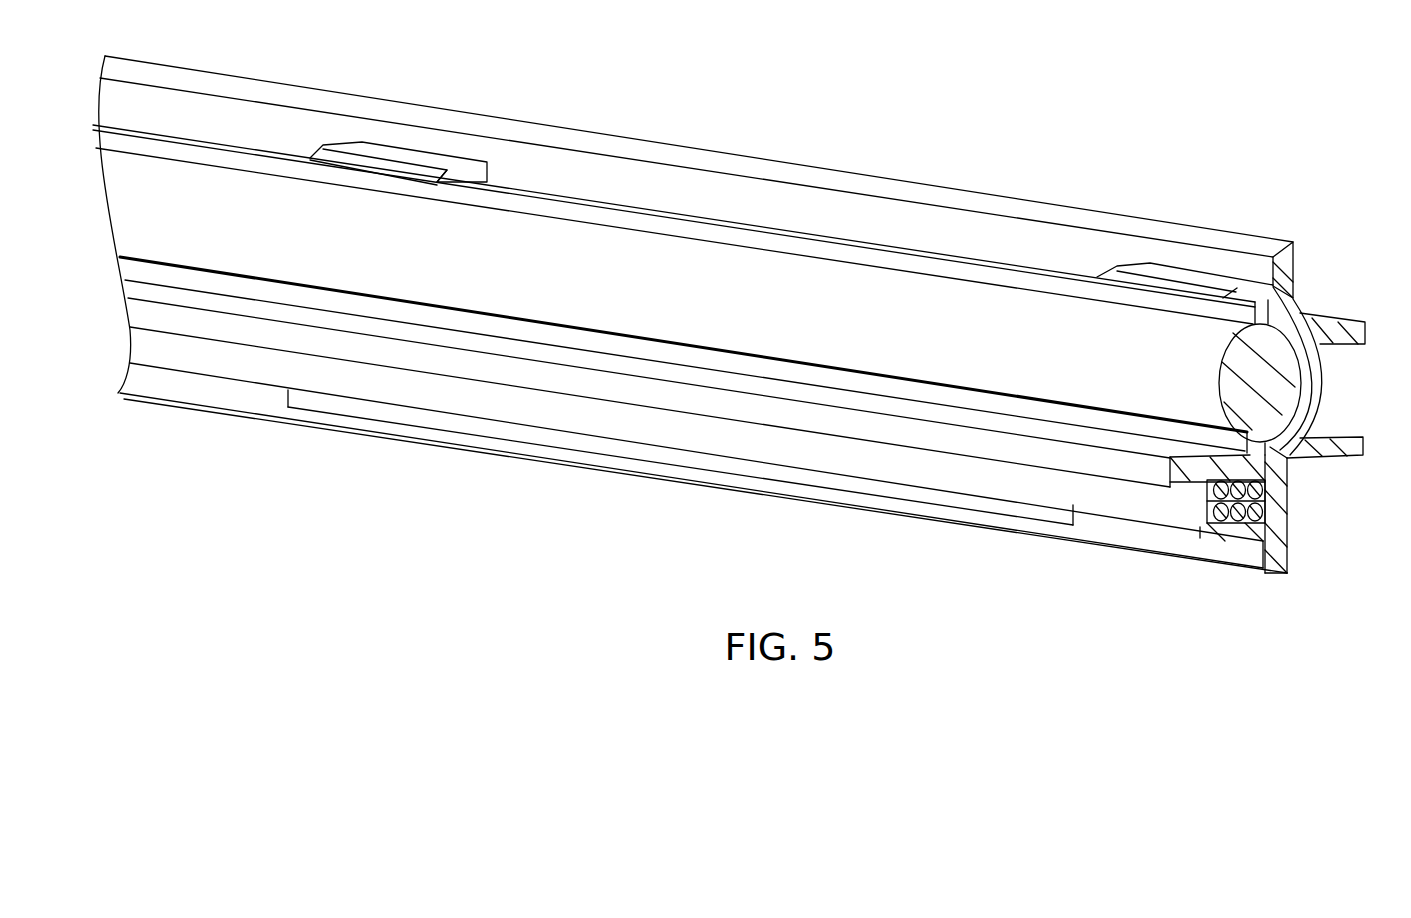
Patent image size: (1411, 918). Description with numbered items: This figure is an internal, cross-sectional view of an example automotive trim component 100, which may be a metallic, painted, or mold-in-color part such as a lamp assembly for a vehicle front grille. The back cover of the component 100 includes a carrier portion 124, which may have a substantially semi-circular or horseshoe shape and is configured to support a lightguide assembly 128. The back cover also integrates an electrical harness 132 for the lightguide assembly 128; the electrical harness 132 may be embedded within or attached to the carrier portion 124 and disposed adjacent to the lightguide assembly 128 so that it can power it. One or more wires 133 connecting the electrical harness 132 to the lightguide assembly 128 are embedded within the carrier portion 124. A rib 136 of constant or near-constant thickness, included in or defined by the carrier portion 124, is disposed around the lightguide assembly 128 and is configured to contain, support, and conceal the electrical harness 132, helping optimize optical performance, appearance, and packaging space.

The automotive trim component 100 is at (1231, 141).
The rib 136 is at (1289, 245).
The lightguide assembly 128 is at (1262, 393).
The carrier portion 124 is at (1338, 447).
The electrical harness 132 is at (1170, 507).
The wires 133 is at (1287, 573).